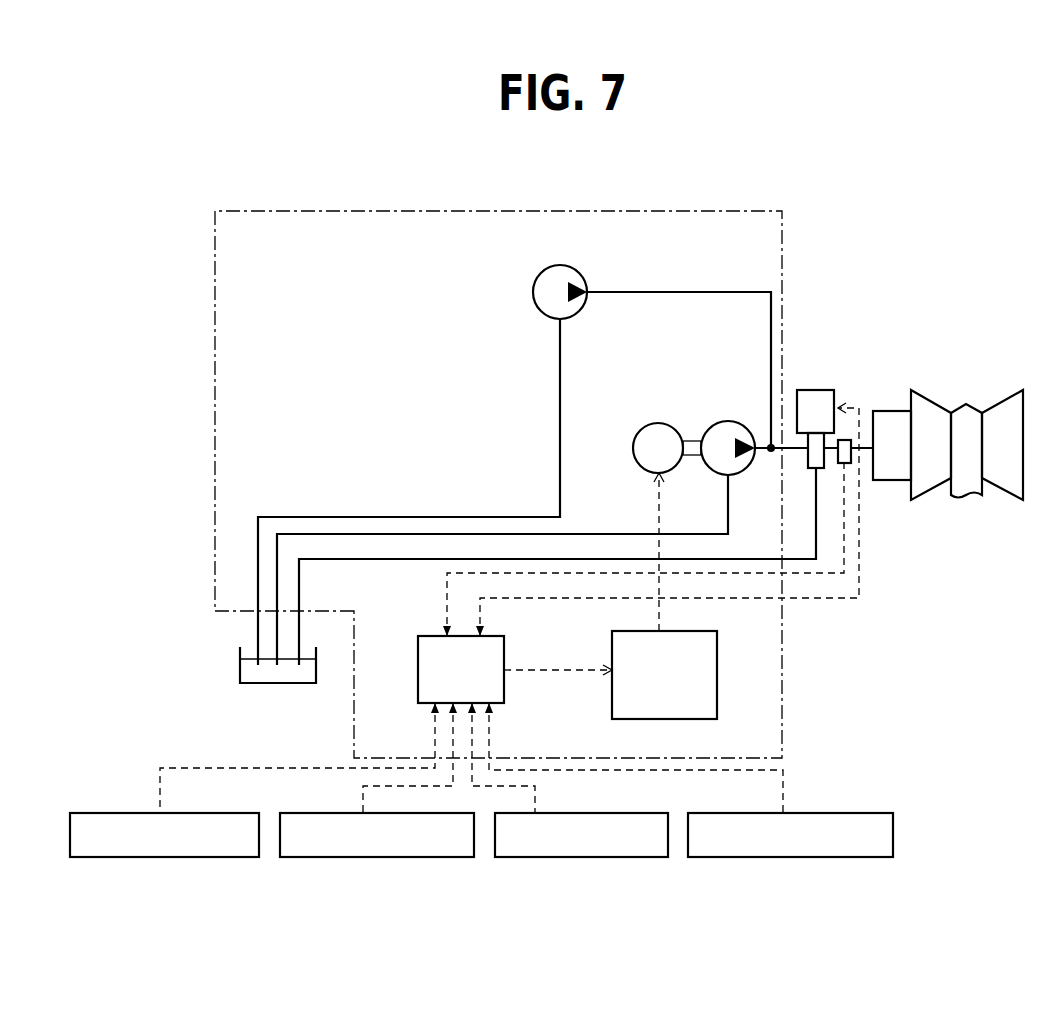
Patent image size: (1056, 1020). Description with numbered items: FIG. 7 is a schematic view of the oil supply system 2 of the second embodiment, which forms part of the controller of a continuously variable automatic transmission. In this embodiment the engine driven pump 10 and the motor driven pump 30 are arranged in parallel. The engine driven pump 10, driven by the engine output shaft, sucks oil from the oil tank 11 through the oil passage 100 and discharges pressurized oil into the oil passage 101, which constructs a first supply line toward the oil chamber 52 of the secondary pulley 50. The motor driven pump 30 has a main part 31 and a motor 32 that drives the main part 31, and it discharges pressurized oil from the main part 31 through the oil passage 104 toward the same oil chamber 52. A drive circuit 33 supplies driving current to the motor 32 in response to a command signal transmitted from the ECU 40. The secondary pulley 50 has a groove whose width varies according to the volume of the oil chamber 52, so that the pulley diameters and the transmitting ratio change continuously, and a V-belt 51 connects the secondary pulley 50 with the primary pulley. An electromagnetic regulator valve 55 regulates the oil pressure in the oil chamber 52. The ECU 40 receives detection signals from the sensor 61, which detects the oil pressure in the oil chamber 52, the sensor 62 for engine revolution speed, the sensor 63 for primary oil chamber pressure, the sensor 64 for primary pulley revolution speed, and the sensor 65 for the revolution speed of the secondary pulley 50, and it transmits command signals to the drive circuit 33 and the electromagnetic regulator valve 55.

The oil supply system 2 is at (710, 211).
The engine driven pump 10 is at (532, 291).
The oil tank 11 is at (240, 661).
The motor driven pump 30 is at (735, 364).
The main part 31 is at (722, 423).
The motor 32 is at (657, 423).
The drive circuit 33 is at (717, 668).
The ECU 40 is at (420, 636).
The secondary pulley 50 is at (925, 405).
The V-belt 51 is at (967, 405).
The oil chamber 52 is at (882, 411).
The electromagnetic regulator valve 55 is at (805, 390).
The sensor 61 is at (845, 440).
The sensor 62 is at (110, 857).
The sensor 63 is at (315, 857).
The sensor 64 is at (513, 857).
The sensor 65 is at (715, 857).
The oil passage 100 is at (405, 517).
The oil passage 101 is at (677, 292).
The oil passage 104 is at (607, 534).